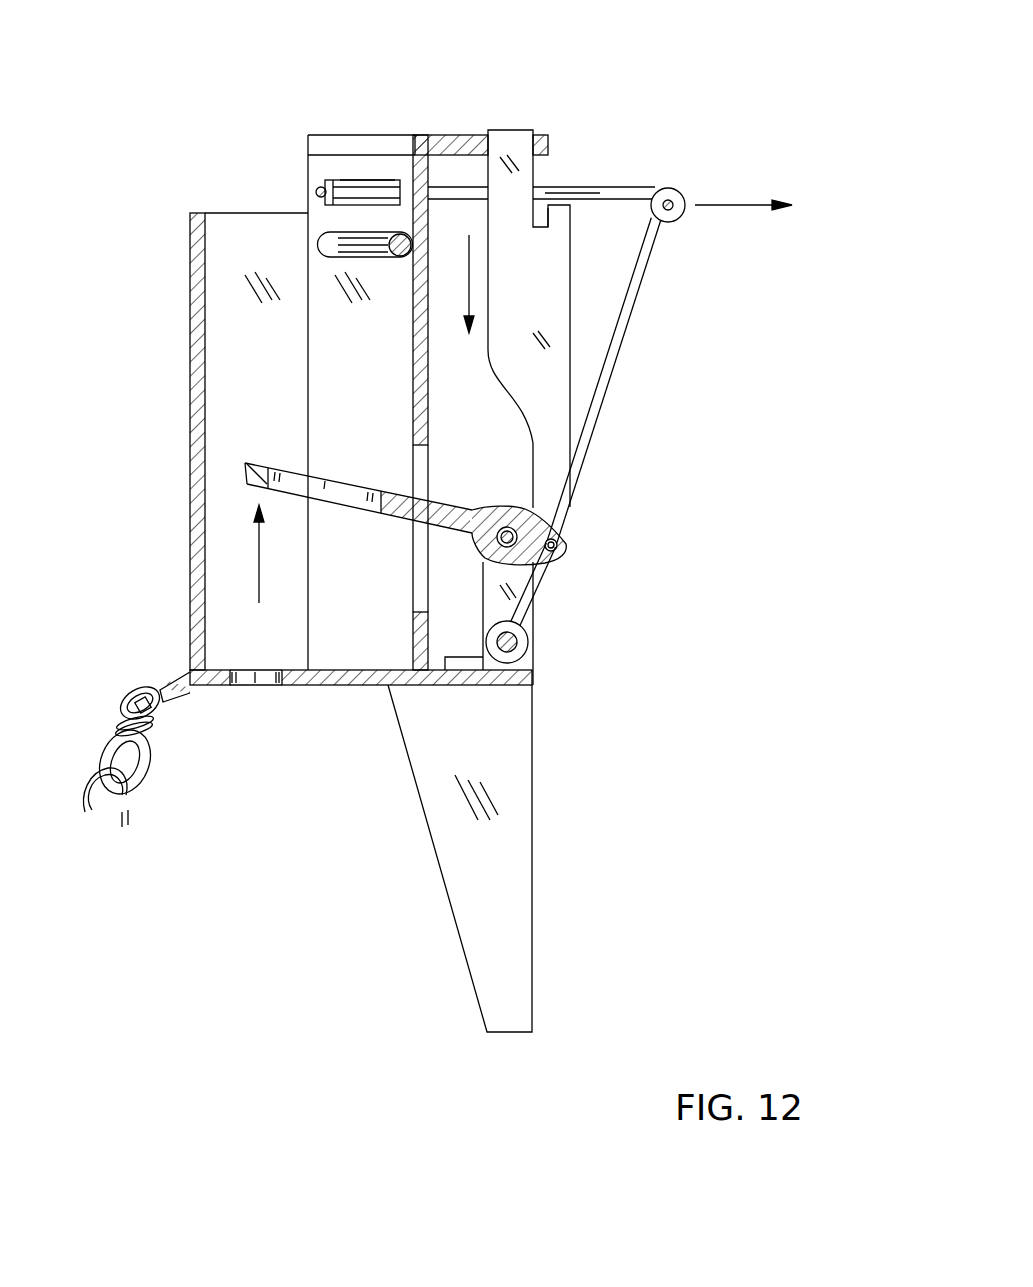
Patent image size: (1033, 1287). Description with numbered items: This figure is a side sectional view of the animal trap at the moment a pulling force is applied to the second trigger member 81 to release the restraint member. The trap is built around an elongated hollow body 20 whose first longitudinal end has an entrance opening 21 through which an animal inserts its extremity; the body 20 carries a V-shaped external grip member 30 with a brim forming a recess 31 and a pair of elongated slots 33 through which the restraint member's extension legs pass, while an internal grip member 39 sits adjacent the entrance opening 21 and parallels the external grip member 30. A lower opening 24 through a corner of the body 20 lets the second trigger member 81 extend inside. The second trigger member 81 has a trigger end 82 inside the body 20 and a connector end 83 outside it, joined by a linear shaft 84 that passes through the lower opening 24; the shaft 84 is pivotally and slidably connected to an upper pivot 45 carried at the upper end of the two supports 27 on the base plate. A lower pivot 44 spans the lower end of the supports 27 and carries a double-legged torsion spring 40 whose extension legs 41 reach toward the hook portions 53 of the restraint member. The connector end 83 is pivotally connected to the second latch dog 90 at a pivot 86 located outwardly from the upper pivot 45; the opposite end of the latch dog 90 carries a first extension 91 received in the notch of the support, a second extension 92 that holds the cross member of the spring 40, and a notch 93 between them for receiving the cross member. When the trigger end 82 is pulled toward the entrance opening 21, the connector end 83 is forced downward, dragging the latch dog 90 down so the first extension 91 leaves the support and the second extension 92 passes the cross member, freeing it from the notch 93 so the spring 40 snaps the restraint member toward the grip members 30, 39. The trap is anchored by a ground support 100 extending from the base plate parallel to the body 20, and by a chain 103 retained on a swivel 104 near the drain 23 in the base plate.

The hollow body 20 is at (190, 265).
The entrance opening 21 is at (212, 213).
The drain 23 is at (252, 685).
The lower opening 24 is at (413, 593).
The supports 27 is at (545, 596).
The external grip member 30 is at (360, 135).
The recess 31 is at (337, 167).
The elongated slots 33 is at (363, 178).
The internal grip member 39 is at (318, 243).
The torsion spring 40 is at (528, 650).
The extension legs 41 is at (632, 340).
The lower pivot 44 is at (530, 690).
The upper pivot 45 is at (507, 535).
The hook portions 53 is at (683, 196).
The second trigger member 81 is at (282, 456).
The trigger end 82 is at (258, 463).
The connector end 83 is at (556, 528).
The shaft 84 is at (400, 493).
The link pin 86 is at (555, 550).
The second latch dog 90 is at (515, 128).
The first extension 91 is at (488, 135).
The second extension 92 is at (560, 205).
The notch 93 is at (540, 230).
The ground support 100 is at (508, 935).
The chain 103 is at (125, 810).
The swivel 104 is at (153, 742).